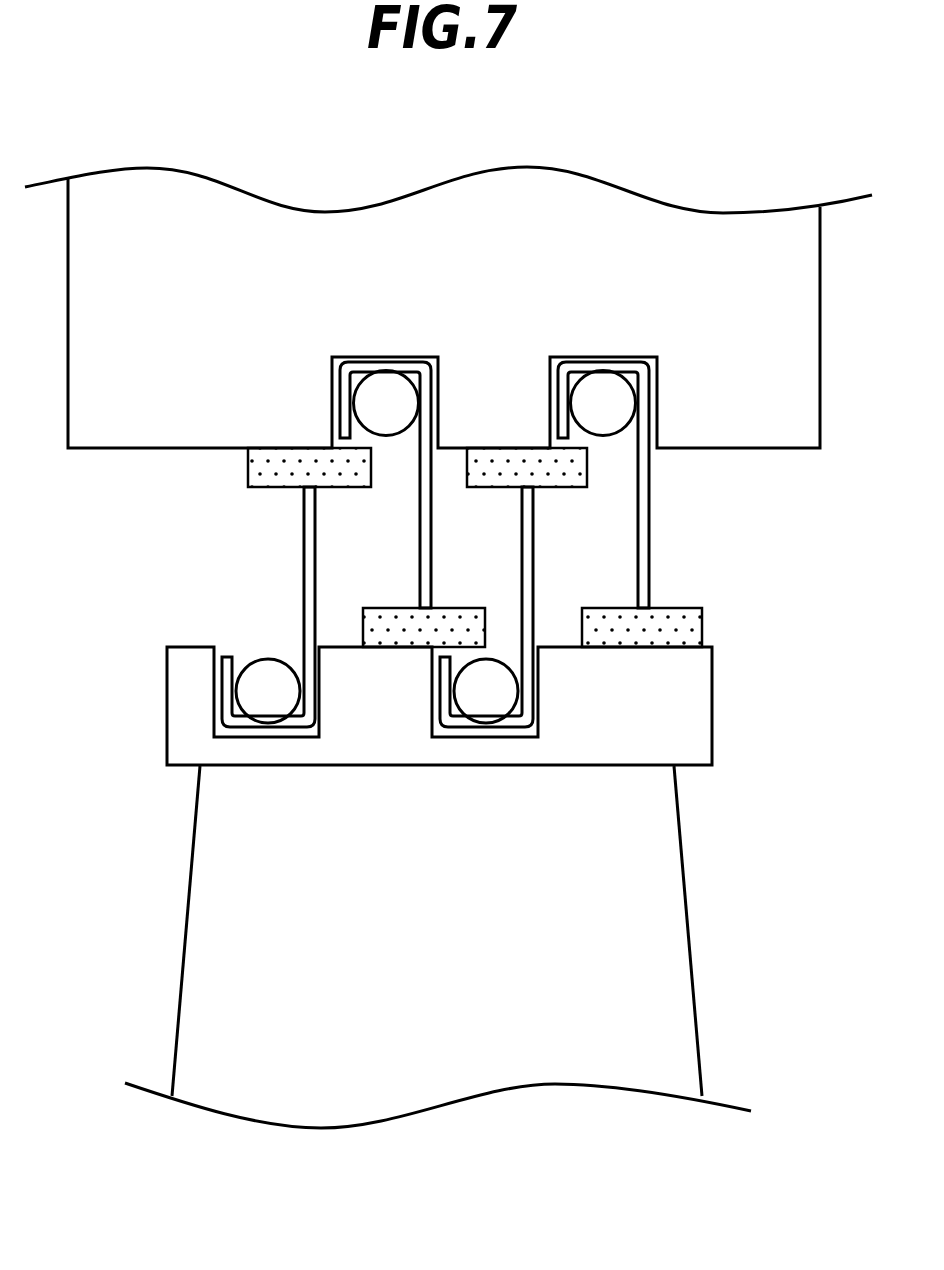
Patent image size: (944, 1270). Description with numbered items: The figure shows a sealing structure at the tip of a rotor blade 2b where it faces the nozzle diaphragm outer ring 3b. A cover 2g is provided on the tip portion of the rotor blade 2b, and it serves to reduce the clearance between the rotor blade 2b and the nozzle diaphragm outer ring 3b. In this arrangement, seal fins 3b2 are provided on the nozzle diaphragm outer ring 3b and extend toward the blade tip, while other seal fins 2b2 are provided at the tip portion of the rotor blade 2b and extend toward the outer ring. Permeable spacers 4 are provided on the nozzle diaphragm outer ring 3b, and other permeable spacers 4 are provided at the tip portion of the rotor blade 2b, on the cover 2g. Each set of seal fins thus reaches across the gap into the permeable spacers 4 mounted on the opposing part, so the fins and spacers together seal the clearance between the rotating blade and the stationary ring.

The nozzle diaphragm outer ring 3b is at (797, 299).
The seal fins 3b2 is at (649, 528).
The seal fins 2b2 is at (303, 545).
The cover 2g is at (713, 697).
The permeable spacers 4 is at (587, 463).
The rotor blade 2b is at (650, 896).